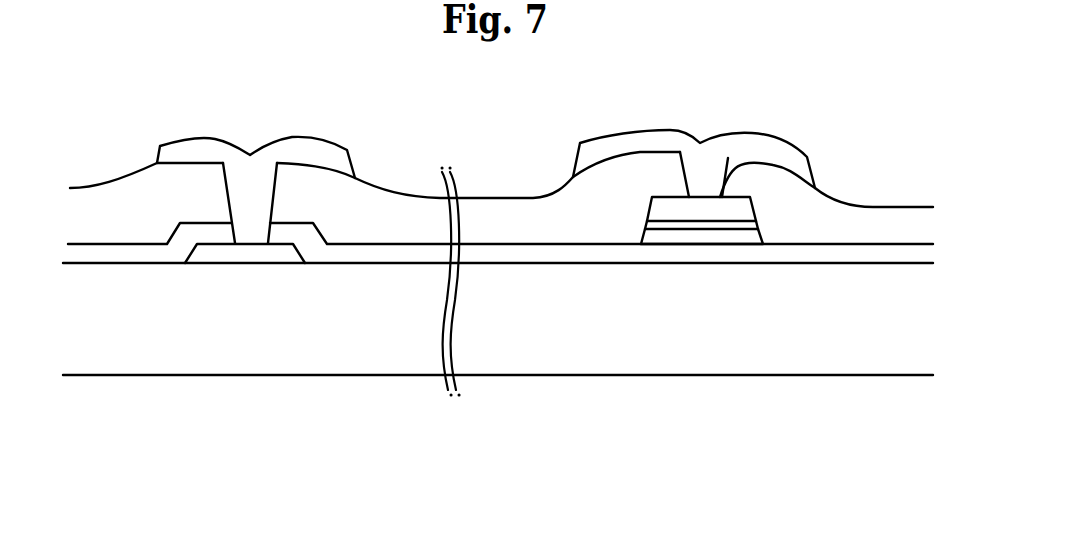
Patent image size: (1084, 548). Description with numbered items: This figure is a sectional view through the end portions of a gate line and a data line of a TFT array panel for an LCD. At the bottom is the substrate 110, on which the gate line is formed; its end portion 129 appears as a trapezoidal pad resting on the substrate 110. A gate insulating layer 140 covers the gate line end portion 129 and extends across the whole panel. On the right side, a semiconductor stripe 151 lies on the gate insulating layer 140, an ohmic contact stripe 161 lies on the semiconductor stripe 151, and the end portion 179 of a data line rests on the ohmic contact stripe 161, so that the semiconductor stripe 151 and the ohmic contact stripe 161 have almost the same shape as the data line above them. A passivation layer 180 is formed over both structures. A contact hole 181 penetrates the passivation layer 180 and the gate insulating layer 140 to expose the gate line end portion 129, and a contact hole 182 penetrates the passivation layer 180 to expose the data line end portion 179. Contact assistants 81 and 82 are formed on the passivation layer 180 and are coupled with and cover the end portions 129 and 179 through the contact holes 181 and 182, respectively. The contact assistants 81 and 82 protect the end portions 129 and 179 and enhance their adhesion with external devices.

The substrate 110 is at (179, 367).
The end portion of gate line 129 is at (243, 256).
The gate insulating layer 140 is at (332, 257).
The semiconductor stripe 151 is at (657, 238).
The ohmic contact stripe 161 is at (697, 223).
The end portion of data line 179 is at (733, 213).
The passivation layer 180 is at (547, 223).
The contact hole 181 is at (250, 181).
The contact hole 182 is at (700, 177).
The contact assistant 81 is at (308, 143).
The contact assistant 82 is at (760, 143).